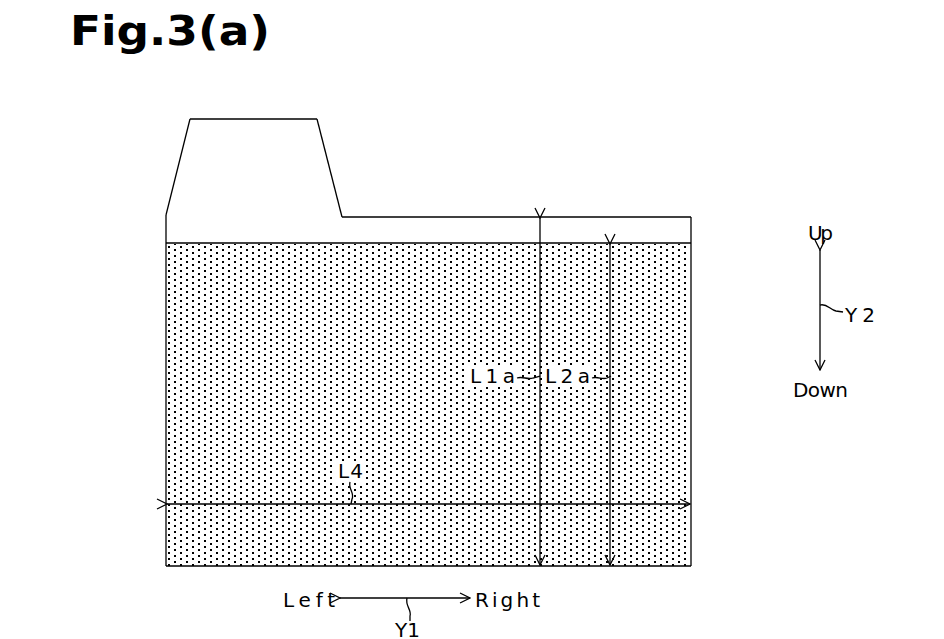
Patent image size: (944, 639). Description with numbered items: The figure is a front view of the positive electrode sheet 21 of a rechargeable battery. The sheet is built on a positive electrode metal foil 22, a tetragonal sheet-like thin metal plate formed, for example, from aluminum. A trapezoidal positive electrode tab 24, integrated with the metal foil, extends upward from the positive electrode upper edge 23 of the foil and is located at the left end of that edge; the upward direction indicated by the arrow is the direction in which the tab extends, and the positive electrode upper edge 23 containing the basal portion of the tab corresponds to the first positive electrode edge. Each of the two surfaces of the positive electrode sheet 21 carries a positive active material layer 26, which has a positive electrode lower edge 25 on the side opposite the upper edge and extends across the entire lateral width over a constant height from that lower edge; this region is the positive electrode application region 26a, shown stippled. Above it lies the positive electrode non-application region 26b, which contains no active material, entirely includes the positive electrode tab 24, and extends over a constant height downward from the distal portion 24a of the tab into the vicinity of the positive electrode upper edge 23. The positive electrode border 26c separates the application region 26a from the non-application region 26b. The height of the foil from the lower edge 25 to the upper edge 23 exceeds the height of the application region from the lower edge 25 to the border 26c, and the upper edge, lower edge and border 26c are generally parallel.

The positive electrode sheet 21 is at (761, 151).
The positive electrode metal foil 22 is at (176, 393).
The positive electrode upper edge 23 is at (465, 217).
The positive electrode tab 24 is at (316, 151).
The distal portion 24a is at (302, 119).
The positive electrode lower edge 25 is at (575, 567).
The positive active material layer 26 is at (168, 315).
The positive electrode application region 26a is at (723, 247).
The positive electrode non-application region 26b is at (723, 118).
The positive electrode border 26c is at (183, 243).